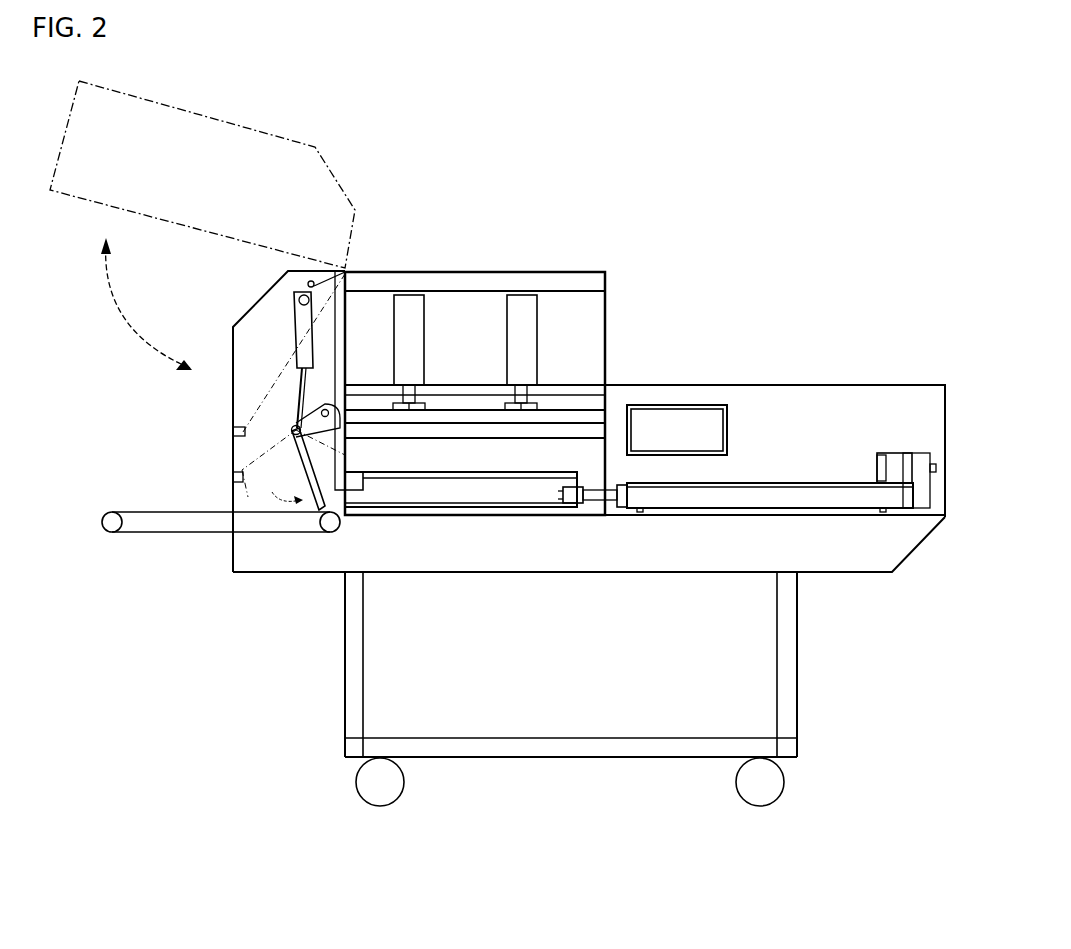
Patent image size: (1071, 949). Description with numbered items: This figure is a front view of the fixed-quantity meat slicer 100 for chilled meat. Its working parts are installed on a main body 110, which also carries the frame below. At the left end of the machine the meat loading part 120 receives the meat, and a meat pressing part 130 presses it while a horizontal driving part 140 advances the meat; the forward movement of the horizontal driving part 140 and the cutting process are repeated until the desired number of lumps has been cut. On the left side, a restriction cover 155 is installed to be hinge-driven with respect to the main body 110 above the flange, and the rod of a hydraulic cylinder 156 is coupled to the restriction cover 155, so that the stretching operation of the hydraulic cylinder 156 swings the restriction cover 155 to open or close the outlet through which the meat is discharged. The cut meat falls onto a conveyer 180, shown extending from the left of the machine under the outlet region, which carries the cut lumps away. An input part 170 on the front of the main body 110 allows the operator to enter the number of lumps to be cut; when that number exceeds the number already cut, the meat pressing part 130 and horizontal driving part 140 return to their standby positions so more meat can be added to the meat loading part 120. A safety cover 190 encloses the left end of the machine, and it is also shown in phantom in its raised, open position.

The fixed-quantity meat slicer for chilled meat 100 is at (497, 443).
The main body 110 is at (851, 560).
The meat loading part 120 is at (458, 500).
The meat pressing part 130 is at (462, 427).
The horizontal driving part 140 is at (598, 505).
The restriction cover 155 is at (315, 515).
The hydraulic cylinder 156 is at (300, 318).
The input part 170 is at (678, 418).
The conveyer 180 is at (176, 532).
The safety cover 190 is at (234, 395).